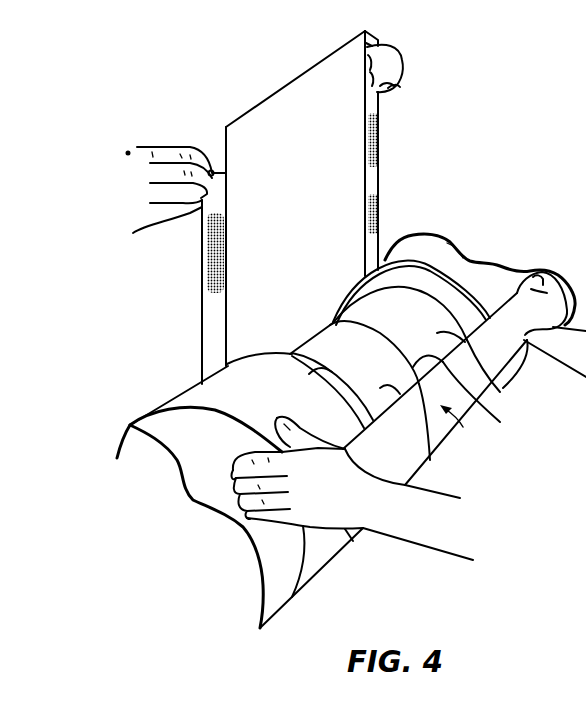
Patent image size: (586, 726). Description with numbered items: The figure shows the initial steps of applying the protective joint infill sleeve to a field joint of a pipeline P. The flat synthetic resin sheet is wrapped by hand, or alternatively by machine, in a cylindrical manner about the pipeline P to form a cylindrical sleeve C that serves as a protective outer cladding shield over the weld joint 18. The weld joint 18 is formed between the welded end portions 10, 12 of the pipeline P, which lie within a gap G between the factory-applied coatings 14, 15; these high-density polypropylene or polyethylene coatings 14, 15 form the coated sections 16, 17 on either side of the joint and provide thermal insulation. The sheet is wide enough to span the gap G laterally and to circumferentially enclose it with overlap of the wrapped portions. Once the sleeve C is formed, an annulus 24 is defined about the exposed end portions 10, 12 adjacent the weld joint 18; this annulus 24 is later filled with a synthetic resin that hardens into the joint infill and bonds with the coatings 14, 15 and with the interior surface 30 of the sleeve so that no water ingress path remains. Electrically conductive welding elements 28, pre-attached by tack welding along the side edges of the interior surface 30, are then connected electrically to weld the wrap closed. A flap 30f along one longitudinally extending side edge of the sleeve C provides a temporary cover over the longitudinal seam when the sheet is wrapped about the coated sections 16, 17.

The welded end portion 10 is at (430, 460).
The welded end portion 12 is at (493, 387).
The coating 14 is at (303, 372).
The coating 15 is at (390, 275).
The coated section 16 is at (190, 392).
The coated section 17 is at (433, 257).
The weld joint 18 is at (500, 422).
The annulus 24 is at (374, 357).
The welding element 28 is at (203, 273).
The interior surface 30 is at (313, 198).
The flap 30f is at (280, 130).
The cylindrical sleeve C is at (463, 427).
The gap G is at (283, 343).
The pipeline P is at (197, 471).